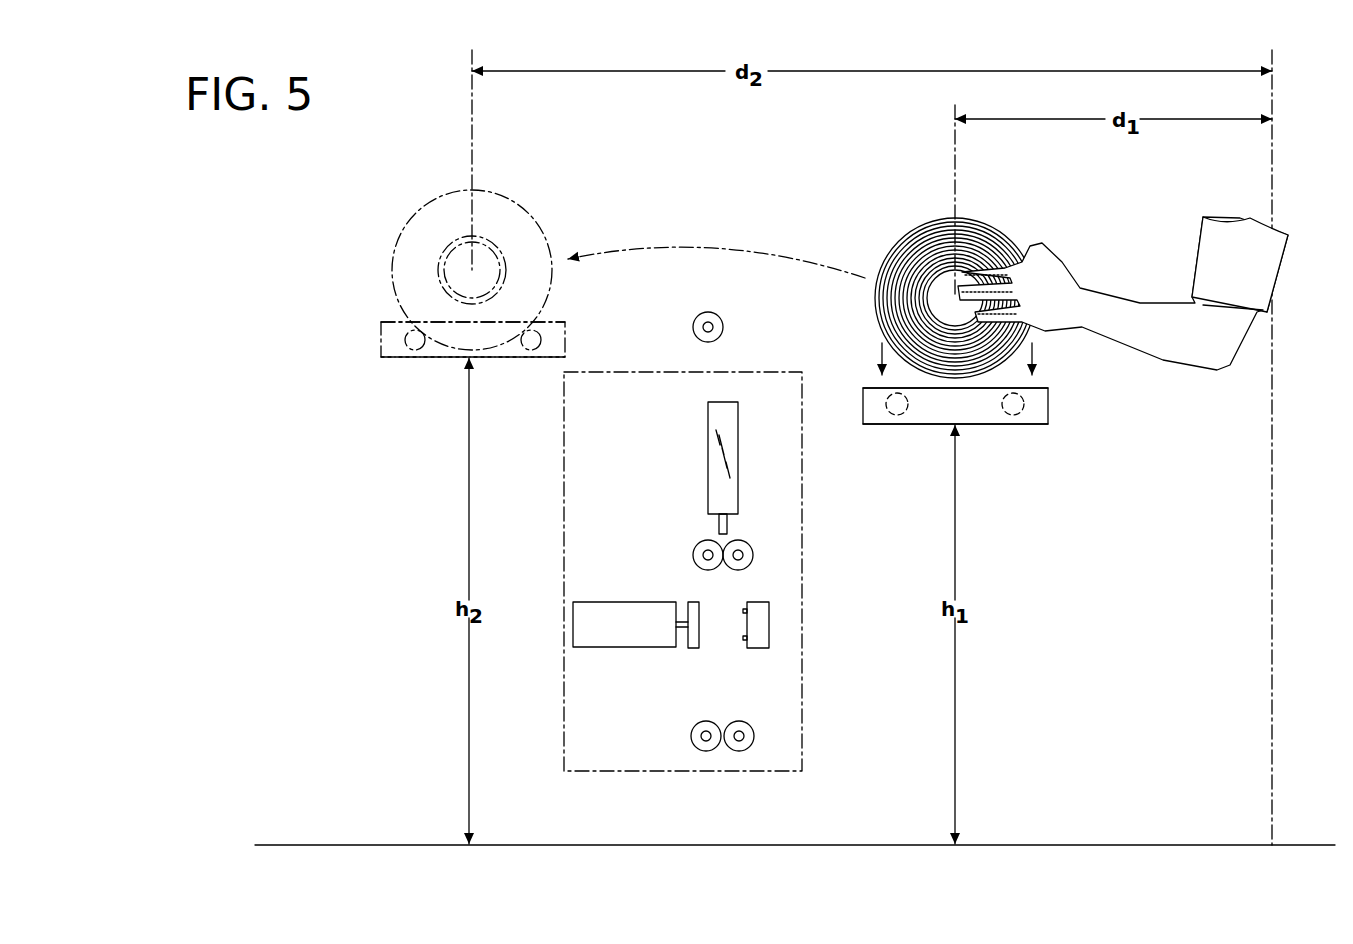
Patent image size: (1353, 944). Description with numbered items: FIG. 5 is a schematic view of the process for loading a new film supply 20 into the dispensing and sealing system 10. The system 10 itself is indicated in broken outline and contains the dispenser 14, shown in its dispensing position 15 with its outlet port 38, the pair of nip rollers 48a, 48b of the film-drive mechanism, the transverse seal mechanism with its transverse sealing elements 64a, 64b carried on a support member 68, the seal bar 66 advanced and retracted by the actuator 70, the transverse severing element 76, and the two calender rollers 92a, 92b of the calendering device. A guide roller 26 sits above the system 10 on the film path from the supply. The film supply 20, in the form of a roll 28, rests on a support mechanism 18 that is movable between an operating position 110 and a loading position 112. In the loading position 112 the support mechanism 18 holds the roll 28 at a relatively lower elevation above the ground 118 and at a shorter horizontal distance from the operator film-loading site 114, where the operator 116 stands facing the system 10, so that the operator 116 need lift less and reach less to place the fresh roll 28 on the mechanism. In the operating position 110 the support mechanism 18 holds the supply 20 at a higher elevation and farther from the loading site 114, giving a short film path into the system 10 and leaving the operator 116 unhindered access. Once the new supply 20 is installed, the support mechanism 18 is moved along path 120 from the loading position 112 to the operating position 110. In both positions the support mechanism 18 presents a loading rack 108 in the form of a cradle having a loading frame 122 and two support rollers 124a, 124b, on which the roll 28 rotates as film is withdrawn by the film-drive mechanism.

The dispensing and sealing system 10 is at (550, 494).
The dispenser 14 is at (718, 418).
The dispensing position 15 is at (698, 453).
The support mechanism 18 is at (380, 335).
The film supply 20 is at (530, 213).
The guide roller 26 is at (712, 312).
The roll 28 is at (410, 247).
The outlet port 38 is at (720, 524).
The nip roller 48a is at (752, 548).
The nip roller 48b is at (693, 555).
The transverse sealing element 64a is at (744, 611).
The transverse sealing element 64b is at (744, 638).
The seal bar 66 is at (691, 602).
The support member 68 is at (769, 624).
The actuator 70 is at (625, 637).
The transverse severing element 76 is at (744, 624).
The calender roller 92a is at (752, 730).
The calender roller 92b is at (691, 736).
The loading rack 108 is at (490, 360).
The operating position 110 is at (517, 190).
The loading position 112 is at (980, 197).
The operator film-loading site 114 is at (1295, 195).
The operator 116 is at (1195, 252).
The ground 118 is at (752, 843).
The path 120 is at (709, 250).
The loading frame 122 is at (446, 360).
The support roller 124a is at (413, 350).
The support roller 124b is at (541, 340).